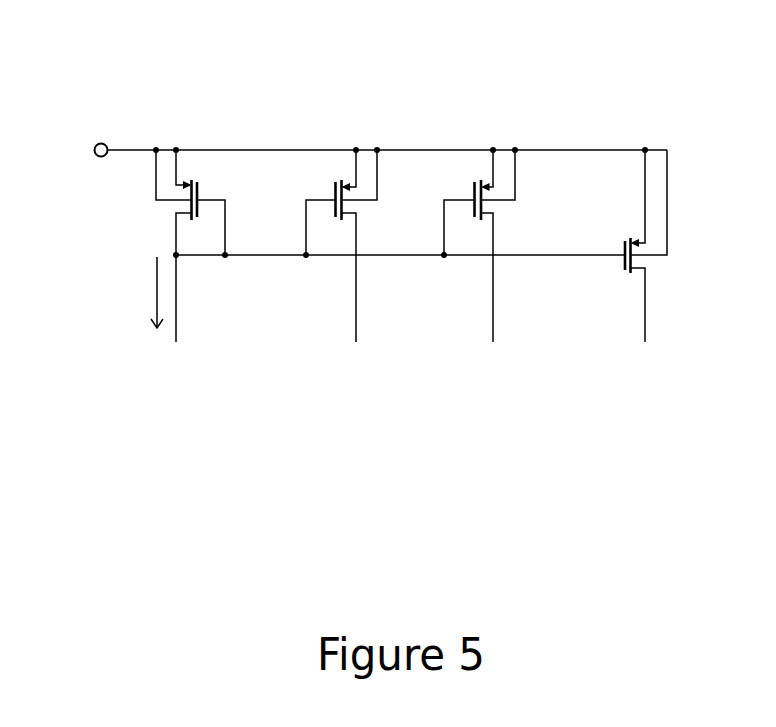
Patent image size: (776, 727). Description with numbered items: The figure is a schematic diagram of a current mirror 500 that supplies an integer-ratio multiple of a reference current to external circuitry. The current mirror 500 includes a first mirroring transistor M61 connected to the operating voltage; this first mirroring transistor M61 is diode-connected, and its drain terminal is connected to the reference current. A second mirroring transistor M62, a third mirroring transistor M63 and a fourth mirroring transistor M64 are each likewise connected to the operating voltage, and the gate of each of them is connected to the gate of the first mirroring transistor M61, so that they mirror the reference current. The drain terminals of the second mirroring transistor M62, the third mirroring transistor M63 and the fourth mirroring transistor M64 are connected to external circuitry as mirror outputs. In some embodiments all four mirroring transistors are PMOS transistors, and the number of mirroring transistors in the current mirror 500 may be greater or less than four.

The current mirror 500 is at (698, 93).
The first mirroring transistor M61 is at (203, 246).
The second mirroring transistor M62 is at (329, 246).
The third mirroring transistor M63 is at (467, 246).
The fourth mirroring transistor M64 is at (618, 246).